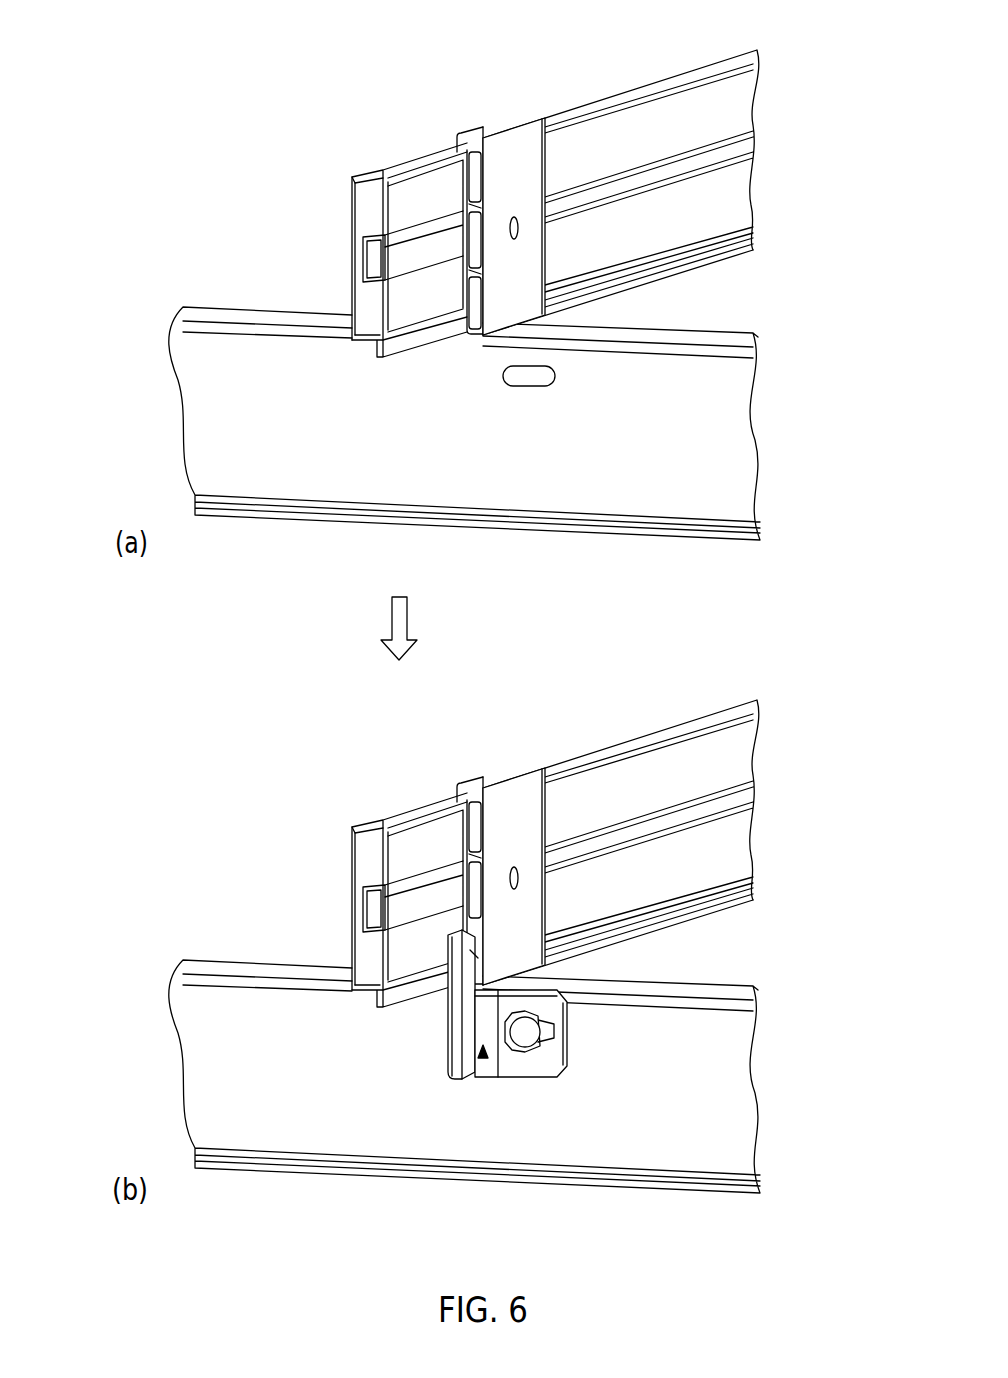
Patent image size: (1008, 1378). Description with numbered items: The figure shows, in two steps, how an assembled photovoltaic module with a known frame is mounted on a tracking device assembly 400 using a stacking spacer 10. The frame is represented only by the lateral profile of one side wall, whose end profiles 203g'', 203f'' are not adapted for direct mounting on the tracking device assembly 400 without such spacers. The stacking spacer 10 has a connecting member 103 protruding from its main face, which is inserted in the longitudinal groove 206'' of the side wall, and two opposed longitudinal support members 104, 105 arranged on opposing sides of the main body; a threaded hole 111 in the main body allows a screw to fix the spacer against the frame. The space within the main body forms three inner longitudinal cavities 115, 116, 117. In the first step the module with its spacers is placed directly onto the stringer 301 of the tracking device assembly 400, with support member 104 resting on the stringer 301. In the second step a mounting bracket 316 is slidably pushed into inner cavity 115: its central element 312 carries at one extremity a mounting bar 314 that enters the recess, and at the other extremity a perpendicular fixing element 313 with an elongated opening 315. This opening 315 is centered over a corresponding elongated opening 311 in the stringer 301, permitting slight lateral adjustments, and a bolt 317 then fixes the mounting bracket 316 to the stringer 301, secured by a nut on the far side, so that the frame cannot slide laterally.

The stacking spacer 10 is at (508, 92).
The connecting member 103 is at (452, 240).
The support member 104 is at (548, 320).
The support member 105 is at (518, 120).
The threaded hole 111 is at (520, 229).
The inner cavity 115 is at (465, 336).
The inner cavity 116 is at (473, 222).
The inner cavity 117 is at (473, 157).
The end profile 203g'' is at (351, 485).
The end profile 203f'' is at (278, 686).
The longitudinal groove 206'' is at (312, 586).
The stringer 301 is at (738, 478).
The opening 311 is at (538, 386).
The central element 312 is at (467, 1042).
The fixing element 313 is at (533, 1060).
The mounting bar 314 is at (473, 955).
The opening 315 is at (549, 1029).
The mounting bracket 316 is at (483, 1060).
The bolt 317 is at (531, 1036).
The tracking device assembly 400 is at (502, 750).